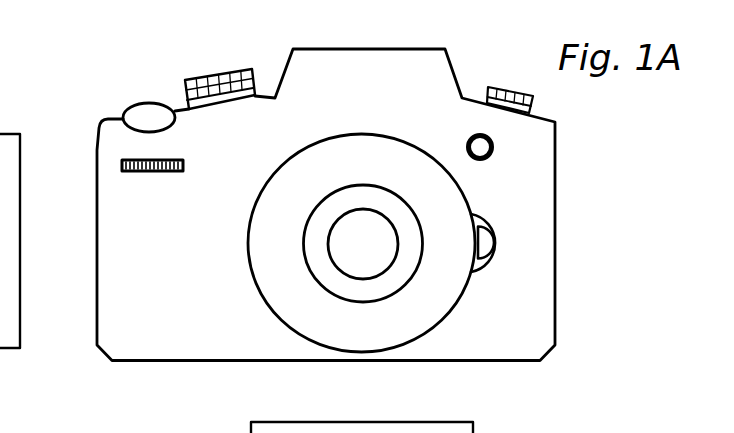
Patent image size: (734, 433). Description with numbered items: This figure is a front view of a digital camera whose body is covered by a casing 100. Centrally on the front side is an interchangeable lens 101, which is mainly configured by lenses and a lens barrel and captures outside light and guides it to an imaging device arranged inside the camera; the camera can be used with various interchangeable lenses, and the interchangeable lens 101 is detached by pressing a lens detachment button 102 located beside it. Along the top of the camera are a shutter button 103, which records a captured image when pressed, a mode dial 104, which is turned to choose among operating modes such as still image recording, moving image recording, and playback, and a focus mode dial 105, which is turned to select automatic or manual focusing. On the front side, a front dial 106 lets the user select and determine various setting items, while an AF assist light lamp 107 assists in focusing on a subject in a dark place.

The casing 100 is at (102, 350).
The interchangeable lens 101 is at (452, 313).
The lens detachment button 102 is at (493, 243).
The shutter button 103 is at (143, 103).
The mode dial 104 is at (203, 77).
The focus mode dial 105 is at (518, 92).
The front dial 106 is at (152, 172).
The AF assist light lamp 107 is at (495, 148).